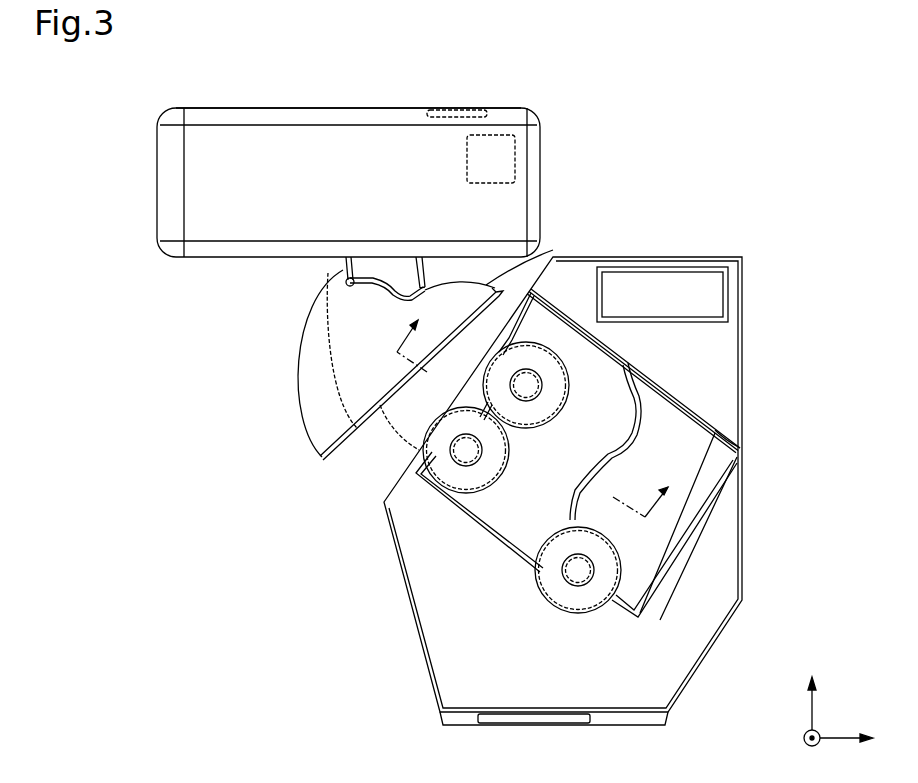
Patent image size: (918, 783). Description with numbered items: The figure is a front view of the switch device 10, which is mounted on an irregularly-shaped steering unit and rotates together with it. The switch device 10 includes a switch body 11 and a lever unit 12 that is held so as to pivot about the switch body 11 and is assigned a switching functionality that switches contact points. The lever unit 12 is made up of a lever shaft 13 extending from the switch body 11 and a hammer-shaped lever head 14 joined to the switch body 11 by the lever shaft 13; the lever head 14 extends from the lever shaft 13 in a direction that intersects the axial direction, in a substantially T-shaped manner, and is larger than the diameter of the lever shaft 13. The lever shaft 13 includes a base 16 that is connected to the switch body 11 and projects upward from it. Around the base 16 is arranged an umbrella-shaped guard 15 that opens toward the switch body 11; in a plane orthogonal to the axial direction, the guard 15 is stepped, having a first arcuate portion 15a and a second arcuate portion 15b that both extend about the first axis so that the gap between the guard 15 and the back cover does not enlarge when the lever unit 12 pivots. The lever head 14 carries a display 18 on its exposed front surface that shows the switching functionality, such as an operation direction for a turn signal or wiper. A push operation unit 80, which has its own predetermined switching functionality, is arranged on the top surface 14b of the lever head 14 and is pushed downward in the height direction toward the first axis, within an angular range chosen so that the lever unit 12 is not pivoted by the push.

The switch device 10 is at (84, 113).
The switch body 11 is at (722, 253).
The lever unit 12 is at (235, 270).
The lever shaft 13 is at (338, 272).
The lever head 14 is at (306, 222).
The top surface of lever head 14b is at (273, 108).
The guard 15 is at (308, 415).
The first arcuate portion 15a is at (524, 286).
The second arcuate portion 15b is at (300, 378).
The base 16 is at (423, 268).
The display 18 is at (490, 135).
The push operation unit 80 is at (427, 112).